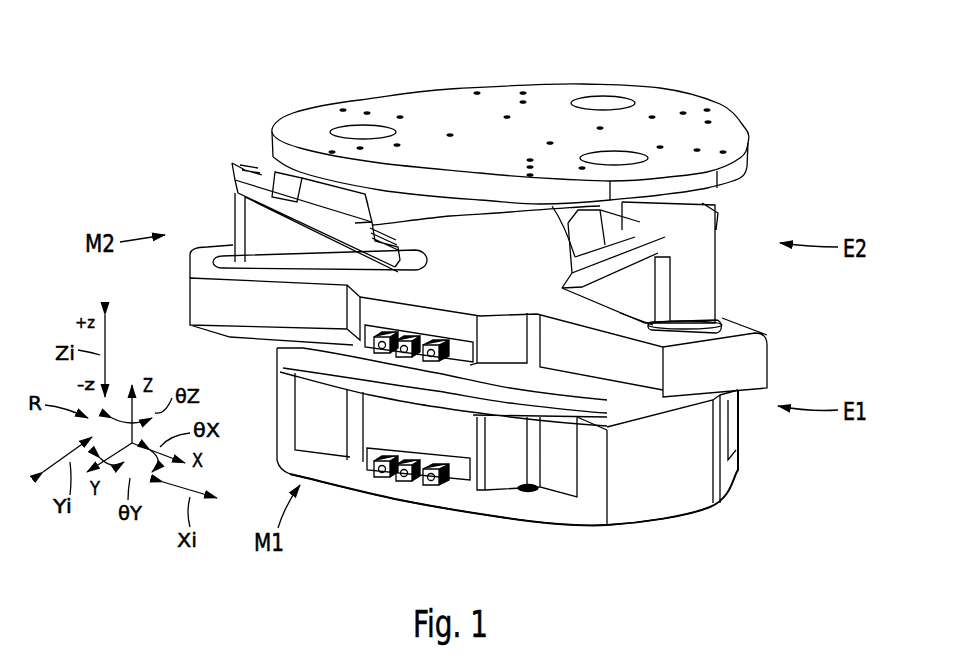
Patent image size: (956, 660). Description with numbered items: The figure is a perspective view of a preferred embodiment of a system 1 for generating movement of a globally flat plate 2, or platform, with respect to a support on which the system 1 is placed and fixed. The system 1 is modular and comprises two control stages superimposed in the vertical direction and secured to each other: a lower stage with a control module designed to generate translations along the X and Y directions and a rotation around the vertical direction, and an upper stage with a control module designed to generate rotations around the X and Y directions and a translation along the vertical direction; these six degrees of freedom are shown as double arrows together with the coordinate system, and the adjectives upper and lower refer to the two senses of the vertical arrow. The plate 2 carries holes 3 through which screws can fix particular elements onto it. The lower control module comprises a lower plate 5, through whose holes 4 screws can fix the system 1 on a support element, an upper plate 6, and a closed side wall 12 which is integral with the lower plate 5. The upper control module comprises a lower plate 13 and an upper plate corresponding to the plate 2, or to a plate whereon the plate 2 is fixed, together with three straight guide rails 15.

The system 1 is at (152, 190).
The plate 2 is at (752, 164).
The holes 3 is at (452, 128).
The holes 4 is at (337, 470).
The lower plate 5 is at (554, 514).
The upper plate 6 is at (275, 360).
The closed side wall 12 is at (683, 490).
The lower plate 13 is at (277, 343).
The straight guide rails 15 is at (226, 192).